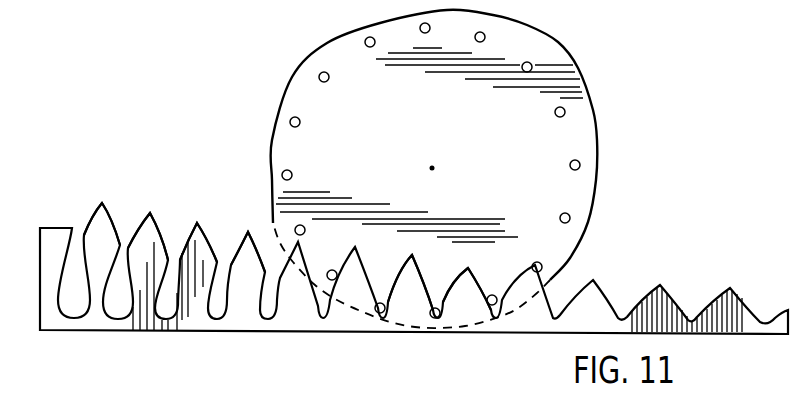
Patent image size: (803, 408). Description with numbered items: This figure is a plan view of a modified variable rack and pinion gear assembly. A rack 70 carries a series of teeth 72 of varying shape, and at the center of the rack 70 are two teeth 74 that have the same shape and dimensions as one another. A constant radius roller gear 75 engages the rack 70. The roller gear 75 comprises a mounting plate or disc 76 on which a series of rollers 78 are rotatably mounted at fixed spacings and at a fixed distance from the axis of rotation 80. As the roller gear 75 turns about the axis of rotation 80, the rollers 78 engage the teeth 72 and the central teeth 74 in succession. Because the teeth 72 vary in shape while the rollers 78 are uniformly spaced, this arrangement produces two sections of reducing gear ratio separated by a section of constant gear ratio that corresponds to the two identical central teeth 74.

The rack 70 is at (235, 318).
The teeth 72 is at (247, 235).
The two teeth at the center of the rack 74 is at (470, 275).
The constant radius roller gear 75 is at (583, 82).
The mounting plate or disc 76 is at (572, 135).
The rollers 78 is at (570, 216).
The axis of rotation 80 is at (434, 166).